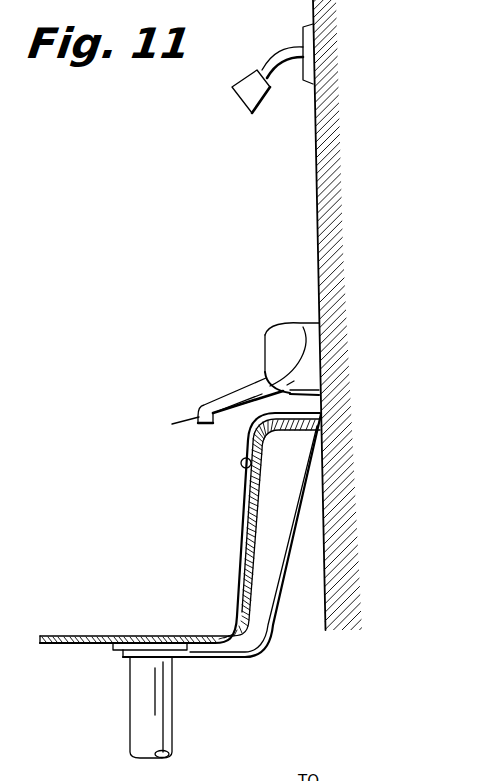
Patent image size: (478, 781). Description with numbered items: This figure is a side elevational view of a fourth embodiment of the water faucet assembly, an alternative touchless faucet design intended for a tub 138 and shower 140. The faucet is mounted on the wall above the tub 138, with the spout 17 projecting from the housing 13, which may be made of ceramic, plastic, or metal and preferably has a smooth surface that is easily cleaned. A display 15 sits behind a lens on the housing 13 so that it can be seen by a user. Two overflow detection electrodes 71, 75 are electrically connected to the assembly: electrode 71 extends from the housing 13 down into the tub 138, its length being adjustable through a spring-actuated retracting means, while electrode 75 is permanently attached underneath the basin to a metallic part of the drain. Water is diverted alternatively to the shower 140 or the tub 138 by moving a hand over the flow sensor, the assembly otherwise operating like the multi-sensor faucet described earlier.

The shower 140 is at (240, 100).
The display 15 is at (278, 347).
The spout 17 is at (222, 390).
The housing 13 is at (263, 406).
The overflow detection electrode 71 is at (248, 451).
The tub 138 is at (244, 543).
The overflow detection electrode 75 is at (268, 640).